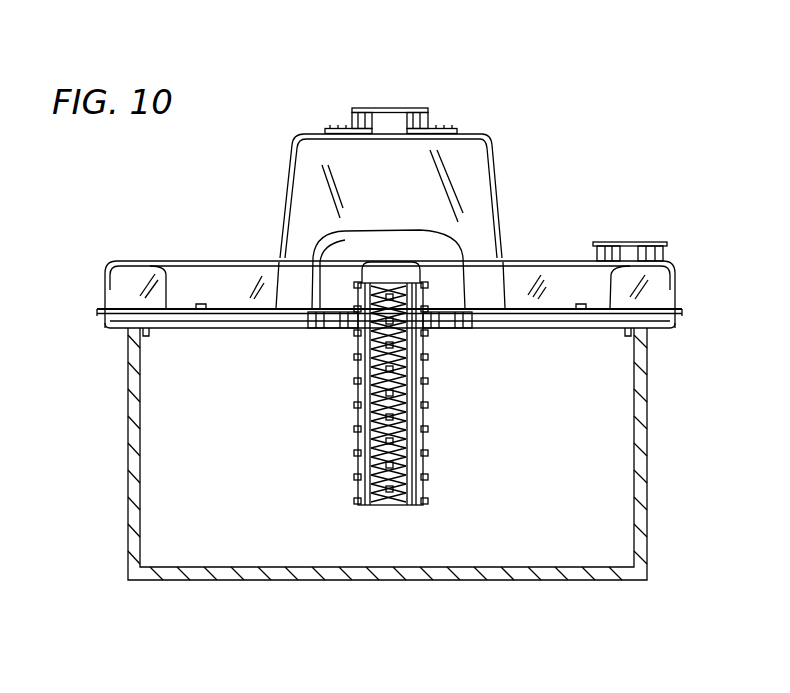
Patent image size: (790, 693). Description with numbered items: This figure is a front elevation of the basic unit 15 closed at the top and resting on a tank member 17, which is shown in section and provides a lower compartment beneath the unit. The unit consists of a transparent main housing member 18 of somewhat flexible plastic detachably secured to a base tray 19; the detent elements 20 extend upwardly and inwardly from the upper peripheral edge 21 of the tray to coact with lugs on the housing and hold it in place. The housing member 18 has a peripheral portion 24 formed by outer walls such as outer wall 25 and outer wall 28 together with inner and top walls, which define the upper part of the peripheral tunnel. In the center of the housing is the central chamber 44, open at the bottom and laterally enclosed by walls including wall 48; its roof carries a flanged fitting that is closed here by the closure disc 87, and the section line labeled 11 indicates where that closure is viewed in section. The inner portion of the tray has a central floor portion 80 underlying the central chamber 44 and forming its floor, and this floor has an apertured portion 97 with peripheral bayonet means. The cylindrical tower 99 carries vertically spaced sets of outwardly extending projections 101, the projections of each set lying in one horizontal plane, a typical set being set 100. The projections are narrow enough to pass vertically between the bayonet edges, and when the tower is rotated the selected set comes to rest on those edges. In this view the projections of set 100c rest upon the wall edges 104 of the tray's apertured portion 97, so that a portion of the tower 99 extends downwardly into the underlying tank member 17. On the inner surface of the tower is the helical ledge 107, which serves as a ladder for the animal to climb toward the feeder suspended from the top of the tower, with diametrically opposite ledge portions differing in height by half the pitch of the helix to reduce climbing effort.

The section line 11- 11 is at (382, 62).
The closure disc 87 is at (414, 104).
The central chamber 44 is at (472, 158).
The wall 48 is at (412, 207).
The main housing member 18 is at (279, 194).
The basic unit 15 is at (511, 197).
The peripheral portion 24 is at (121, 256).
The outer wall 25 is at (107, 283).
The upper peripheral edge 21 is at (98, 309).
The outer wall 28 is at (236, 298).
The detent elements 20 is at (580, 306).
The base tray 19 is at (511, 336).
The set of projections 100 is at (352, 278).
The bayonet wall edges 104 is at (438, 310).
The central floor portion 80 is at (455, 310).
The set of projections 100c is at (335, 318).
The apertured portion 97 is at (416, 383).
The tower 99 is at (431, 416).
The helical ledge 107 is at (410, 447).
The projections 101 is at (427, 476).
The tank member 17 is at (623, 583).